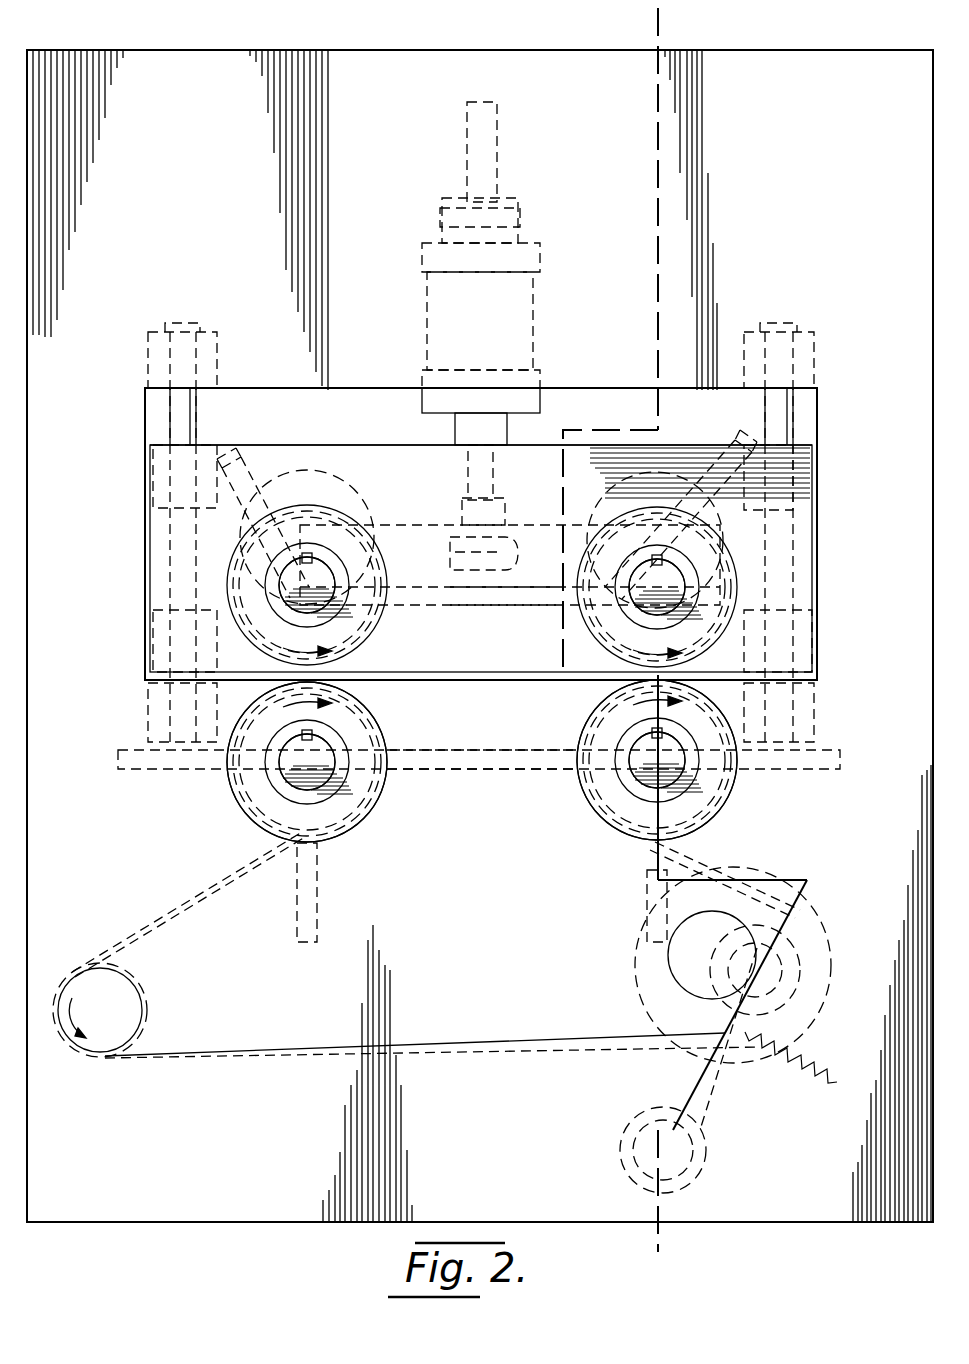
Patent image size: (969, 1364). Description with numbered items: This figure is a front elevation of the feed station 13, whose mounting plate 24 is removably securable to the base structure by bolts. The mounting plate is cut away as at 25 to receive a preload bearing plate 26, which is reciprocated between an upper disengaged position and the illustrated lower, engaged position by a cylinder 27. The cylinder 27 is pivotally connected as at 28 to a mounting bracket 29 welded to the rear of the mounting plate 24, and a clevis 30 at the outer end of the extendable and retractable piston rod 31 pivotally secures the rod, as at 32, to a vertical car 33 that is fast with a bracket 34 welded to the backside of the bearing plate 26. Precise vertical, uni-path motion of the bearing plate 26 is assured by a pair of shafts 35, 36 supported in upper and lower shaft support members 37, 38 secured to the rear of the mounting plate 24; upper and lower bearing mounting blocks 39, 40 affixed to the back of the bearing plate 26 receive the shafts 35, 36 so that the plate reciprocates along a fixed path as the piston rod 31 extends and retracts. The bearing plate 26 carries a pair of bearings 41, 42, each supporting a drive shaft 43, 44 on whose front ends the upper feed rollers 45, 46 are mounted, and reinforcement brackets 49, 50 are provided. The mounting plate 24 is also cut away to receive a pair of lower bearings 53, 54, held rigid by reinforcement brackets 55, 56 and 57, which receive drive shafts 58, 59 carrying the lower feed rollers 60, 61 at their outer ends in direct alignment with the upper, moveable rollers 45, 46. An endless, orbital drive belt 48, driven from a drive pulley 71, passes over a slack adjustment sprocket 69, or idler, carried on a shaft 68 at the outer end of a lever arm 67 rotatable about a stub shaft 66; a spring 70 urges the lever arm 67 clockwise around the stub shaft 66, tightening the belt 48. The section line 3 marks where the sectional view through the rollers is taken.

The section line 3- 3 is at (613, 19).
The feed station 13 is at (441, 45).
The mounting plate 24 is at (247, 1212).
The cut away 25 is at (540, 678).
The preload bearing plate 26 is at (392, 413).
The cylinder 27 is at (518, 320).
The pivotal connection 28 is at (518, 218).
The mounting bracket 29 is at (493, 147).
The clevis 30 is at (505, 507).
The piston rod 31 is at (468, 491).
The pivot 32 is at (518, 558).
The vertical car 33 is at (488, 606).
The bracket 34 is at (421, 606).
The shaft 35 is at (192, 410).
The shaft 36 is at (787, 425).
The upper shaft support member 37 is at (218, 347).
The lower shaft support member 38 is at (150, 716).
The upper bearing mounting block 39 is at (153, 486).
The lower bearing mounting block 40 is at (152, 642).
The bearing 41 is at (228, 588).
The bearing 42 is at (738, 577).
The drive shaft 43 is at (318, 600).
The drive shaft 44 is at (650, 612).
The feed roller 45 is at (337, 493).
The feed roller 46 is at (660, 493).
The drive belt 48 is at (182, 915).
The reinforcement bracket 49 is at (240, 460).
The reinforcement bracket 50 is at (748, 442).
The bearing 53 is at (364, 820).
The bearing 54 is at (590, 805).
The reinforcement bracket 55 is at (193, 770).
The reinforcement bracket 56 is at (312, 903).
The reinforcement bracket 57 is at (466, 772).
The drive shaft 58 is at (297, 772).
The drive shaft 59 is at (650, 778).
The feed roller 60 is at (362, 784).
The feed roller 61 is at (708, 792).
The stub shaft 66 is at (634, 1172).
The lever arm 67 is at (668, 1077).
The shaft 68 is at (813, 915).
The slack adjustment sprocket 69 is at (838, 962).
The spring 70 is at (800, 1090).
The drive pulley 71 is at (128, 1010).